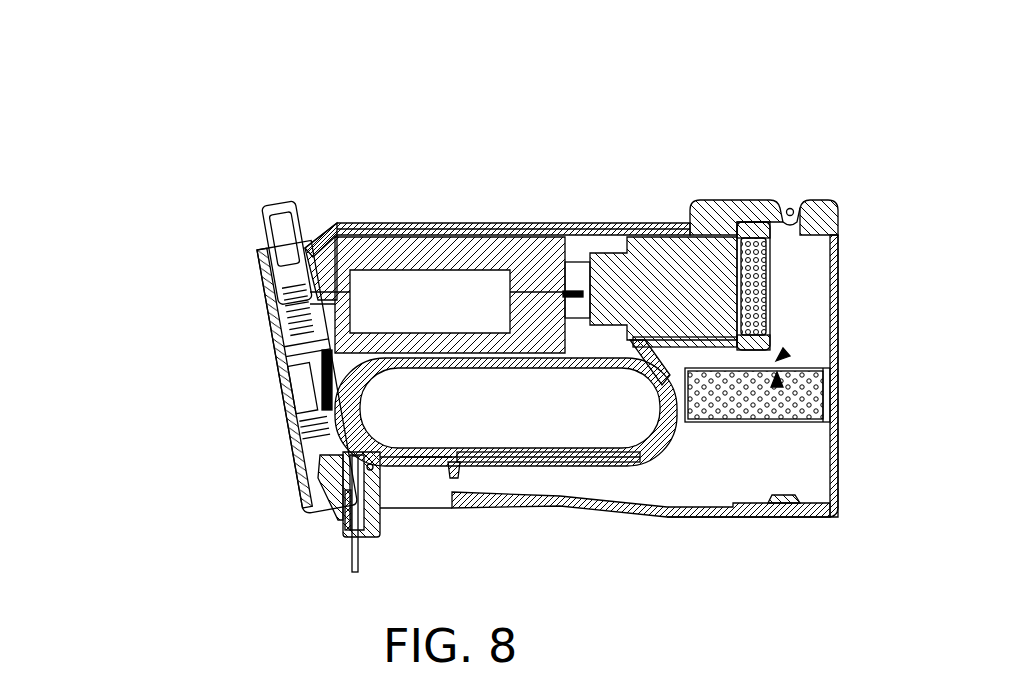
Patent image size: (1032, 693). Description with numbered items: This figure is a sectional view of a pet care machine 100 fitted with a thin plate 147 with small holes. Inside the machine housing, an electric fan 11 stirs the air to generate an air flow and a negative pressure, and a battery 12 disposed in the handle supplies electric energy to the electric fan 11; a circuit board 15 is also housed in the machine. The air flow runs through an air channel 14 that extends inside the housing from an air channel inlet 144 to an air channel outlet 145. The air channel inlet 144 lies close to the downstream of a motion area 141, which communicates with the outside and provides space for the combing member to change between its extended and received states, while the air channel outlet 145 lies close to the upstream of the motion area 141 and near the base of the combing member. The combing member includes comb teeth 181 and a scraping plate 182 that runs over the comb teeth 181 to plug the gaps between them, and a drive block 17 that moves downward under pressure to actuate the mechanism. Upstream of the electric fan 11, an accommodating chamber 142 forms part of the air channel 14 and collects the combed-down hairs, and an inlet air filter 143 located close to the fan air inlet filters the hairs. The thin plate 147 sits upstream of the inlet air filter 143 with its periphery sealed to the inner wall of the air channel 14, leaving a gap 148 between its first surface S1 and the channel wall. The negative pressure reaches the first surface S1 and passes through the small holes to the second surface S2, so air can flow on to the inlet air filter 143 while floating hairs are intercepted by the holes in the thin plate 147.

The pet care machine 100 is at (128, 93).
The electric fan 11 is at (690, 275).
The battery 12 is at (548, 290).
The air channel 14 is at (718, 492).
The circuit board 15 is at (422, 297).
The drive block 17 is at (275, 208).
The motion area 141 is at (400, 500).
The accommodating chamber 142 is at (795, 465).
The inlet air filter 143 is at (773, 310).
The air channel inlet 144 is at (470, 507).
The air channel outlet 145 is at (300, 450).
The thin plate 147 is at (813, 387).
The gap 148 is at (664, 393).
The comb teeth 181 is at (350, 565).
The scraping plate 182 is at (350, 527).
The first surface S1 is at (782, 356).
The second surface S2 is at (777, 387).